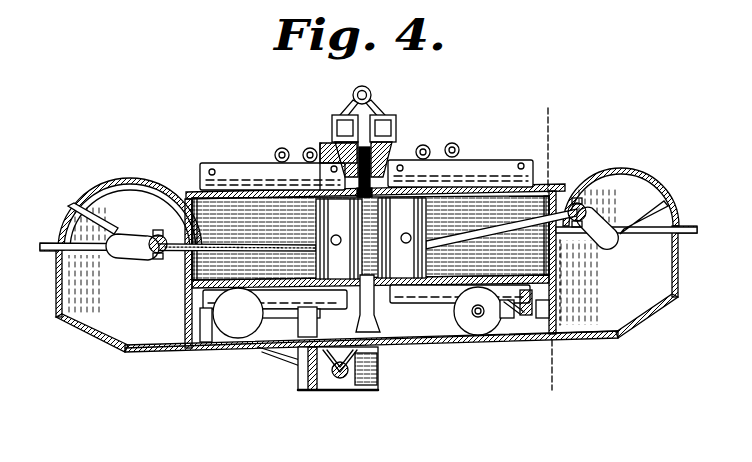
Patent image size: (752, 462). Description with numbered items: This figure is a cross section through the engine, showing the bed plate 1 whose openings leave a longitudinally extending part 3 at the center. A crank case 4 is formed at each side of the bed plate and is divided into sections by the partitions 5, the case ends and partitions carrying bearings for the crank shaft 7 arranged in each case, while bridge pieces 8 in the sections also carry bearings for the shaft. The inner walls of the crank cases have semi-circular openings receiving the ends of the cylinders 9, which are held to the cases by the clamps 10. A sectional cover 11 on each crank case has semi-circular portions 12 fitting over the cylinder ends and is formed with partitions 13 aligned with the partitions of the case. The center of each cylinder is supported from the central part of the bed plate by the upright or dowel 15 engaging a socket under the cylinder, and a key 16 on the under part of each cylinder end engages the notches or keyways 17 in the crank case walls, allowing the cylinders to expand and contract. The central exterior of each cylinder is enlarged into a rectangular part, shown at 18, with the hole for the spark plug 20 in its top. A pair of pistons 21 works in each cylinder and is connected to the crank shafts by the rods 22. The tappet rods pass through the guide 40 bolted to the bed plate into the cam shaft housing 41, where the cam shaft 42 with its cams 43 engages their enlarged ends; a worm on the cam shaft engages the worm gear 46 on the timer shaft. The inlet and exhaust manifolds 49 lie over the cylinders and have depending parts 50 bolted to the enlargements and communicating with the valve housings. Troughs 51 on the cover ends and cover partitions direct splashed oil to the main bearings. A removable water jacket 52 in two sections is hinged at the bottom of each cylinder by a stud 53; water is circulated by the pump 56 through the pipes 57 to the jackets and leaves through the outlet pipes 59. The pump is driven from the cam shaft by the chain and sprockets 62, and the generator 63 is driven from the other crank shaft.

The bed plate 1 is at (497, 354).
The longitudinally extending part 3 is at (440, 350).
The crank case 4 is at (358, 256).
The partitions 5 is at (72, 300).
The crank shaft 7 is at (140, 248).
The bridge pieces 8 is at (570, 282).
The cylinders 9 is at (498, 158).
The clamps 10 is at (208, 200).
The sectional cover 11 is at (128, 182).
The semi-circular portions 12 is at (180, 190).
The partitions 13 is at (106, 193).
The upright or dowel 15 is at (394, 346).
The key 16 is at (188, 280).
The notches or keyways 17 is at (556, 304).
The enlargement 18 is at (430, 148).
The spark plug 20 is at (388, 165).
The pistons 21 is at (312, 265).
The rods 22 is at (244, 252).
The guide 40 is at (304, 364).
The cam shaft housing 41 is at (362, 390).
The cam shaft 42 is at (340, 392).
The cams 43 is at (352, 394).
The worm gear 46 is at (312, 392).
The inlet and exhaust manifolds 49 is at (374, 108).
The depending parts 50 is at (332, 142).
The troughs 51 is at (113, 226).
The water jacket 52 is at (236, 167).
The stud 53 is at (208, 350).
The pump 56 is at (236, 350).
The pipes 57 is at (305, 148).
The outlet pipes 59 is at (460, 146).
The chain and sprockets 62 is at (284, 350).
The generator 63 is at (466, 350).